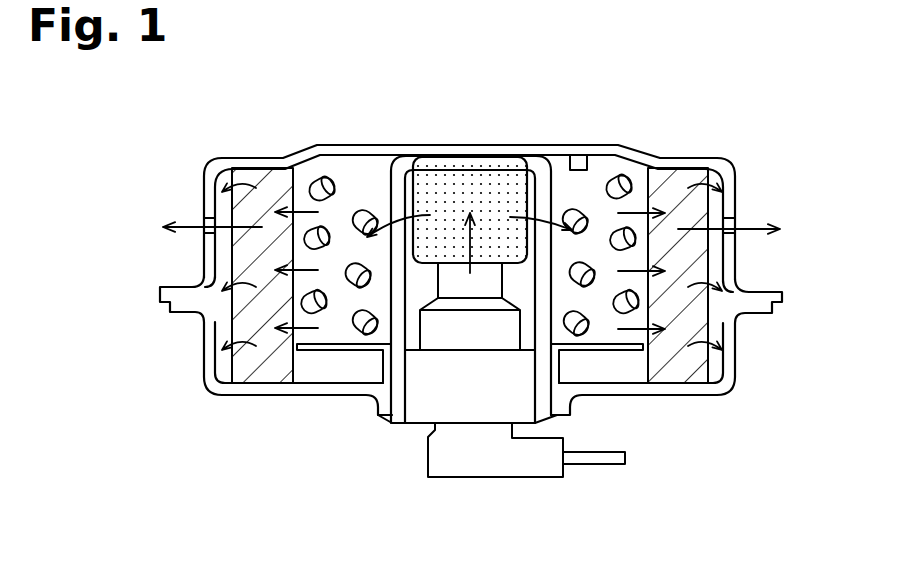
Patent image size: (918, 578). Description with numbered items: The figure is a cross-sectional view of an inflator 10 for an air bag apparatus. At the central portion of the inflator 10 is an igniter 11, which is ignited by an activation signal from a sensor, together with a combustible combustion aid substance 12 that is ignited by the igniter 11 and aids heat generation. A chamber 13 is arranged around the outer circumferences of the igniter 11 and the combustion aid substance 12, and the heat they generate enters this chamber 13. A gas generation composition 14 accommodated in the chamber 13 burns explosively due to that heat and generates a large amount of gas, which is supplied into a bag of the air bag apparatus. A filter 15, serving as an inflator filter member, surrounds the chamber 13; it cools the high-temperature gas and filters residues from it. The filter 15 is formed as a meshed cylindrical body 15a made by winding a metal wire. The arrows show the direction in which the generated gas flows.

The inflator 10 is at (776, 141).
The igniter 11 is at (425, 398).
The combustion aid substance 12 is at (458, 166).
The chamber 13 is at (572, 178).
The gas generation composition 14 is at (618, 180).
The filter 15 is at (260, 378).
The cylindrical body 15a is at (497, 305).